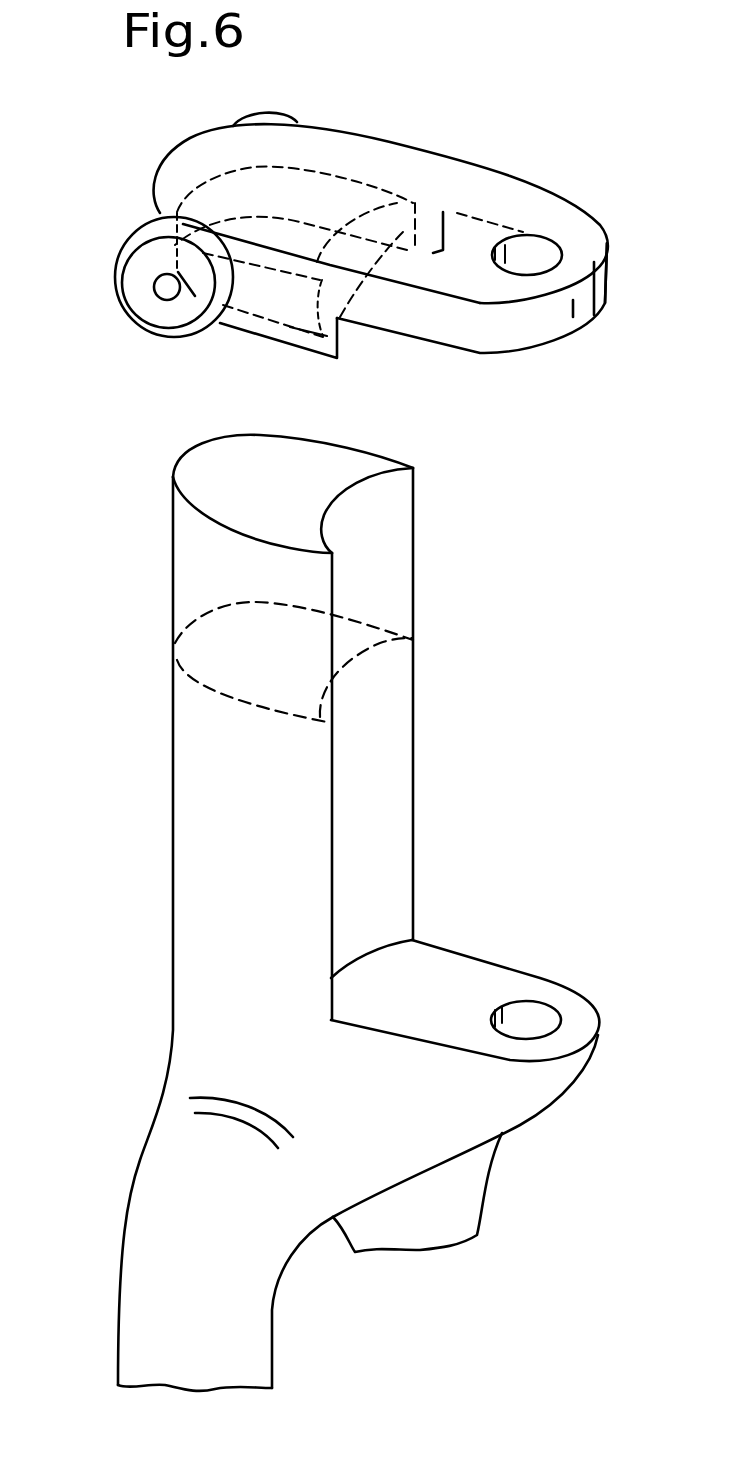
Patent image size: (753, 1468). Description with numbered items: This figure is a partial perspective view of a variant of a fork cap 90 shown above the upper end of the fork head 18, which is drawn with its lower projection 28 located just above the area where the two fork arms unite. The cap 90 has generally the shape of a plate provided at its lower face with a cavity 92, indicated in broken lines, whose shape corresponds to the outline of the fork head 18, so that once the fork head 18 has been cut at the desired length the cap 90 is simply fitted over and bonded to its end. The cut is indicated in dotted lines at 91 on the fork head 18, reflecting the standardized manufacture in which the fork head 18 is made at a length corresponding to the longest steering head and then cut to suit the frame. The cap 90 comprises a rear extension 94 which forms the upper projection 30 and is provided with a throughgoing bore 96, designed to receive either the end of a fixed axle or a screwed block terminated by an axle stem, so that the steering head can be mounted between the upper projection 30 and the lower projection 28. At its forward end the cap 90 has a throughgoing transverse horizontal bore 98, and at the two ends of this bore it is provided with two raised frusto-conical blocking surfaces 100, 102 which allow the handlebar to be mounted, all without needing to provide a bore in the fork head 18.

The cap 90 is at (352, 246).
The rear extension 94 is at (500, 207).
The upper projection 30 is at (590, 213).
The throughgoing bore 96 is at (552, 257).
The frusto-conical blocking surface 102 is at (247, 117).
The frusto-conical blocking surface 100 is at (120, 262).
The transverse horizontal bore 98 is at (167, 287).
The cavity 92 is at (393, 275).
The fork head 18 is at (352, 913).
The cutting line 91 is at (395, 630).
The lower projection 28 is at (508, 1117).